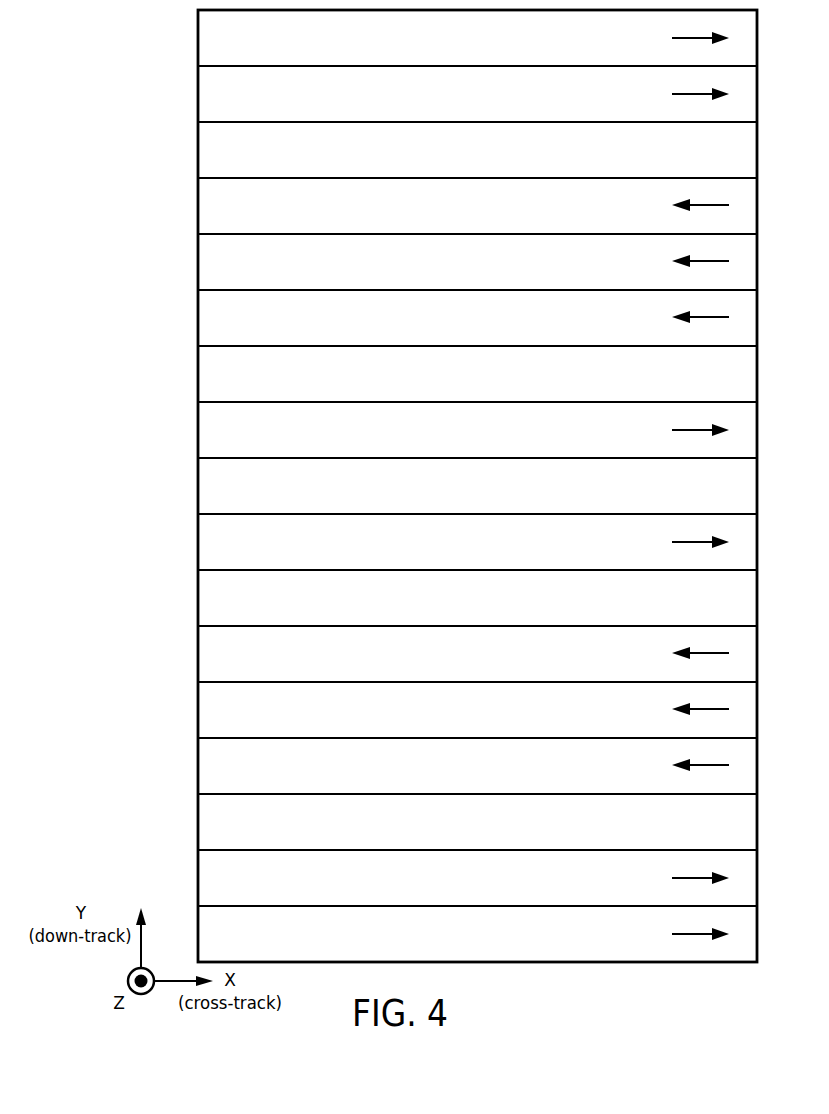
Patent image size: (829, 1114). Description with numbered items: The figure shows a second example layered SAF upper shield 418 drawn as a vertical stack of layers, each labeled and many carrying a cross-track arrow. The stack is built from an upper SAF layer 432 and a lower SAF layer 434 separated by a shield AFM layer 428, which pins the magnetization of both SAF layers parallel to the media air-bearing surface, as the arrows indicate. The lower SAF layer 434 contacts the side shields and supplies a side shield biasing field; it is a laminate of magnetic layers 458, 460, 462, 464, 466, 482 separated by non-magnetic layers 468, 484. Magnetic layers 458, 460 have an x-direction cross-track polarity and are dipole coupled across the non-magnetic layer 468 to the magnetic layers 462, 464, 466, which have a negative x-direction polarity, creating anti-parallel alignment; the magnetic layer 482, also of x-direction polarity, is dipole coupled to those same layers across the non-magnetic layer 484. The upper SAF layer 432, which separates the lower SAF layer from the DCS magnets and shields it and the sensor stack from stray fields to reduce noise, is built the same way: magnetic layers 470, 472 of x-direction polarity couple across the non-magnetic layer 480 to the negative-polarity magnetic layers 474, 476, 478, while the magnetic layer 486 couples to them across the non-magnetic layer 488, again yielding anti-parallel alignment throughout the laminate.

The layered SAF upper shield 418 is at (134, 68).
The upper SAF layer 432 is at (168, 22).
The lower SAF layer 434 is at (183, 512).
The magnetic layer 470 is at (461, 57).
The magnetic layer 472 is at (461, 113).
The non-magnetic layer 480 is at (461, 169).
The magnetic layer 474 is at (461, 225).
The magnetic layer 476 is at (461, 281).
The magnetic layer 478 is at (461, 337).
The non-magnetic layer 488 is at (461, 393).
The magnetic layer 486 is at (461, 449).
The shield AFM layer 428 is at (461, 505).
The magnetic layer 482 is at (461, 561).
The non-magnetic layer 484 is at (461, 617).
The magnetic layer 466 is at (461, 673).
The magnetic layer 464 is at (461, 729).
The magnetic layer 462 is at (461, 785).
The non-magnetic layer 468 is at (461, 841).
The magnetic layer 460 is at (461, 897).
The magnetic layer 458 is at (461, 953).